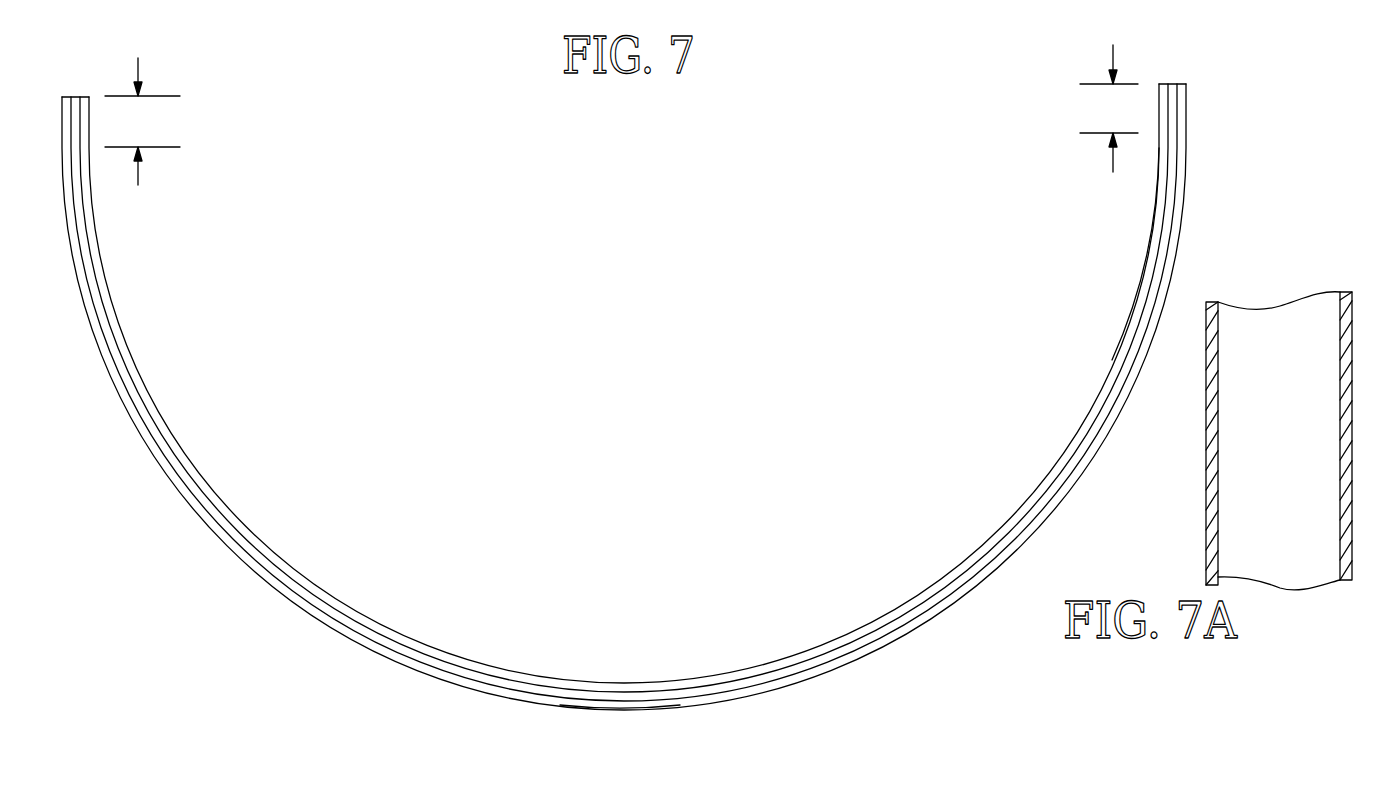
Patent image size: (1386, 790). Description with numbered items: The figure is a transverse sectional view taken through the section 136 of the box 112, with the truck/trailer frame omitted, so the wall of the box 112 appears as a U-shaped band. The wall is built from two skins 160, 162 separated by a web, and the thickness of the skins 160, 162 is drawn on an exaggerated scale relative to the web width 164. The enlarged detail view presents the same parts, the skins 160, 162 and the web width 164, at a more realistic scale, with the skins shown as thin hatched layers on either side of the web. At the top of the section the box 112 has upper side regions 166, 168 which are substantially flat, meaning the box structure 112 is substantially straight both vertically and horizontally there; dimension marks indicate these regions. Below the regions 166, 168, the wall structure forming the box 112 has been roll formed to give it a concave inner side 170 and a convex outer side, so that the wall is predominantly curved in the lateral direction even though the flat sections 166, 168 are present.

In FIG. 7, the box 112 is at (354, 650).
In FIG. 7, the section 136 is at (1112, 360).
In FIG. 7, the skin 160 is at (187, 503).
In FIG. 7A, the skin 160 is at (1205, 362).
In FIG. 7, the skin 162 is at (153, 400).
In FIG. 7A, the skin 162 is at (1353, 308).
In FIG. 7, the web width 164 is at (262, 562).
In FIG. 7A, the web width 164 is at (1300, 419).
In FIG. 7, the upper side region 166 is at (168, 116).
In FIG. 7, the upper side region 168 is at (1095, 108).
In FIG. 7, the concave inner side 170 is at (640, 683).